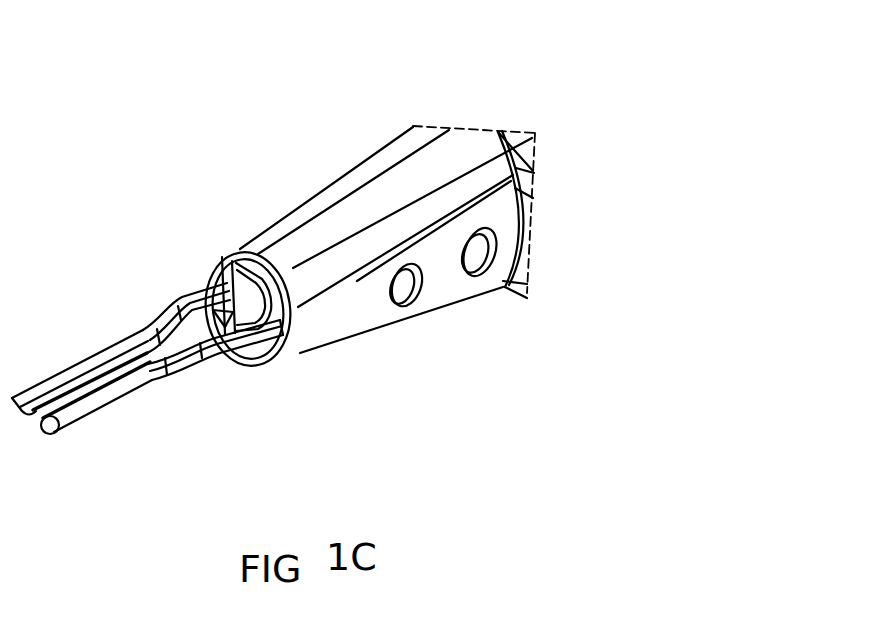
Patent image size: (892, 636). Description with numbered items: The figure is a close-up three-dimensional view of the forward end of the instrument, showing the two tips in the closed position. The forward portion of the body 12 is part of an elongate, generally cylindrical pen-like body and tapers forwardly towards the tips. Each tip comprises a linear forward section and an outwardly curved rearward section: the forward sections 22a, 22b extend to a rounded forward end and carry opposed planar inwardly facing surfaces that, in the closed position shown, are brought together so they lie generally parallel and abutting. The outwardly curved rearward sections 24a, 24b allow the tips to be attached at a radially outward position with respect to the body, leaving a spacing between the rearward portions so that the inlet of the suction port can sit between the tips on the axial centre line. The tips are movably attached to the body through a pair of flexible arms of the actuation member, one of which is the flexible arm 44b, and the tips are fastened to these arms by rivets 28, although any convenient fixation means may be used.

The forward portion of the body 12 is at (381, 173).
The linear forward section 22a is at (80, 385).
The linear forward section 22b is at (100, 397).
The outwardly curved rearward section 24a is at (180, 303).
The outwardly curved rearward section 24b is at (220, 361).
The rivets 28 is at (420, 285).
The flexible arm 44b is at (355, 315).